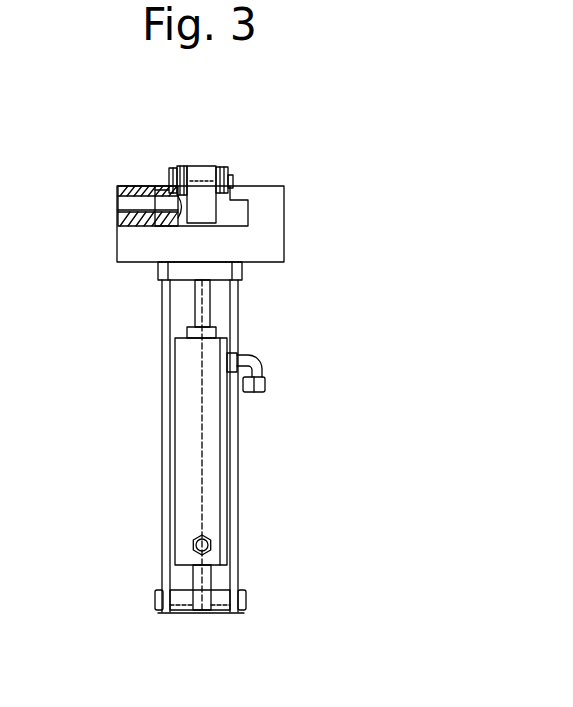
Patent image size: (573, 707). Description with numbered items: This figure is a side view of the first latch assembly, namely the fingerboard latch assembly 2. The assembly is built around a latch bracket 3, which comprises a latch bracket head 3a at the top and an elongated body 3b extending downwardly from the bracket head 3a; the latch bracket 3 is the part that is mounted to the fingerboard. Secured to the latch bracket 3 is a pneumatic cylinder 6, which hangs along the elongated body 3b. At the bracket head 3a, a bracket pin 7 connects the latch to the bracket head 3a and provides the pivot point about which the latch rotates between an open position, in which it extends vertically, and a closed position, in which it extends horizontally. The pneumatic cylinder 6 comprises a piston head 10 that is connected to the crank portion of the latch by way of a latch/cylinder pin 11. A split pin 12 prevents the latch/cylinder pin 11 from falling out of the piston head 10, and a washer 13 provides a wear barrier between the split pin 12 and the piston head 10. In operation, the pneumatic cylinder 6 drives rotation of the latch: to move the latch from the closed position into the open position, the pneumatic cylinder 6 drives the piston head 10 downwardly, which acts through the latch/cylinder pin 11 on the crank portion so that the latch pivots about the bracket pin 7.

The fingerboard latch assembly 2 is at (209, 343).
The latch bracket 3 is at (218, 309).
The latch bracket head 3a is at (265, 220).
The elongated body 3b is at (238, 591).
The pneumatic cylinder 6 is at (190, 443).
The bracket pin 7 is at (128, 207).
The piston head 10 is at (203, 173).
The latch/cylinder pin 11 is at (233, 172).
The split pin 12 is at (171, 168).
The washer 13 is at (180, 168).